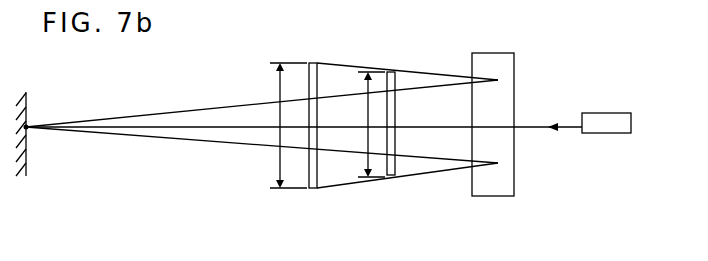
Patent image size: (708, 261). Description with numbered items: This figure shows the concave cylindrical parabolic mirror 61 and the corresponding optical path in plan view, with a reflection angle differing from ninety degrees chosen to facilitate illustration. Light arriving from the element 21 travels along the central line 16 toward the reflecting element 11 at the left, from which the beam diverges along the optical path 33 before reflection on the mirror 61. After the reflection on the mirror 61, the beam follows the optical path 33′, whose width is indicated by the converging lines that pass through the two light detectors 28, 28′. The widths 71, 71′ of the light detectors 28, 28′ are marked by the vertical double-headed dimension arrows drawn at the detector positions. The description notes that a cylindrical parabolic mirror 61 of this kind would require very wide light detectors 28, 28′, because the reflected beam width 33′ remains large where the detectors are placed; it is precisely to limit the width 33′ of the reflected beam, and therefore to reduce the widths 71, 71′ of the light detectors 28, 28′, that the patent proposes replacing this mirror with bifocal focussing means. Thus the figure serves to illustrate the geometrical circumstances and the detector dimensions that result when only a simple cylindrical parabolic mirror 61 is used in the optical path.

The reflecting wall / mirror surface 11 is at (17, 103).
The optical axis 16 is at (125, 133).
The optical path before reflection 33 is at (193, 108).
The optical path after reflection 33′ is at (347, 65).
The light detector 28 is at (392, 75).
The light detector 28′ is at (313, 191).
The width of light detector 71 is at (367, 107).
The width of light detector 71′ is at (279, 163).
The concave cylindrical parabolic mirror 61 is at (508, 181).
The light source 21 is at (625, 123).